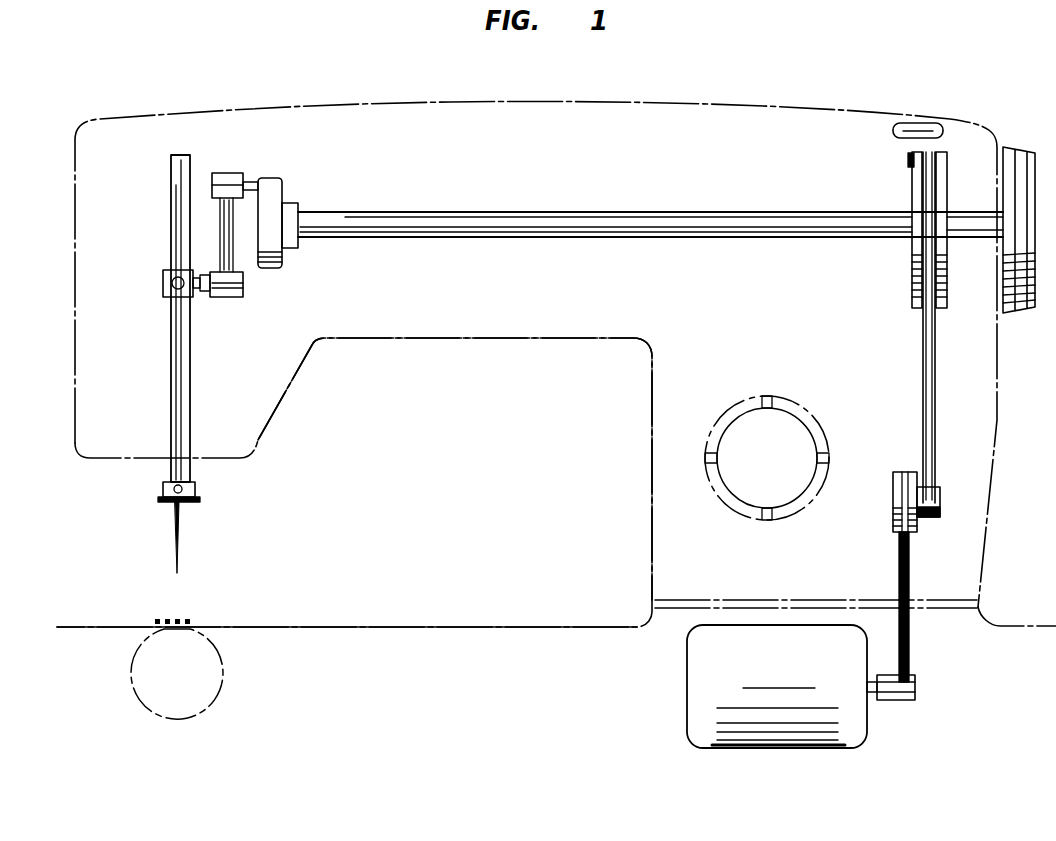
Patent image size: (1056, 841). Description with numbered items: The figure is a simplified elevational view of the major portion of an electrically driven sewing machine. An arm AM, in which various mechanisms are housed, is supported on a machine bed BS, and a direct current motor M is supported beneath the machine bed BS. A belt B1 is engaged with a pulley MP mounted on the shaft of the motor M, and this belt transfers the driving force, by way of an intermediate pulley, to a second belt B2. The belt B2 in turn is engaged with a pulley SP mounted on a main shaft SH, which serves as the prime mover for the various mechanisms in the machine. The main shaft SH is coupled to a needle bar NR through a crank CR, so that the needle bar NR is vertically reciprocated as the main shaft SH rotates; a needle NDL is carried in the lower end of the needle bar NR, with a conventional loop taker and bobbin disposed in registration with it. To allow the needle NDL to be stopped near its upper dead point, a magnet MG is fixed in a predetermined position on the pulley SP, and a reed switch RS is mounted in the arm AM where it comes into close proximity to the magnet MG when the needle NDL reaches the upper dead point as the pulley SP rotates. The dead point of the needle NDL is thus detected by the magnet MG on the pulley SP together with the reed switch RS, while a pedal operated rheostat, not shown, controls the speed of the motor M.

The crank CR is at (230, 173).
The main shaft SH is at (673, 212).
The reed switch RS is at (925, 120).
The magnet MG is at (907, 161).
The pulley SP is at (912, 275).
The needle bar NR is at (190, 370).
The arm AM is at (516, 338).
The belt B2 is at (923, 372).
The belt B1 is at (898, 560).
The needle NDL is at (178, 532).
The machine bed BS is at (472, 625).
The direct current motor M is at (690, 676).
The pulley MP is at (885, 700).